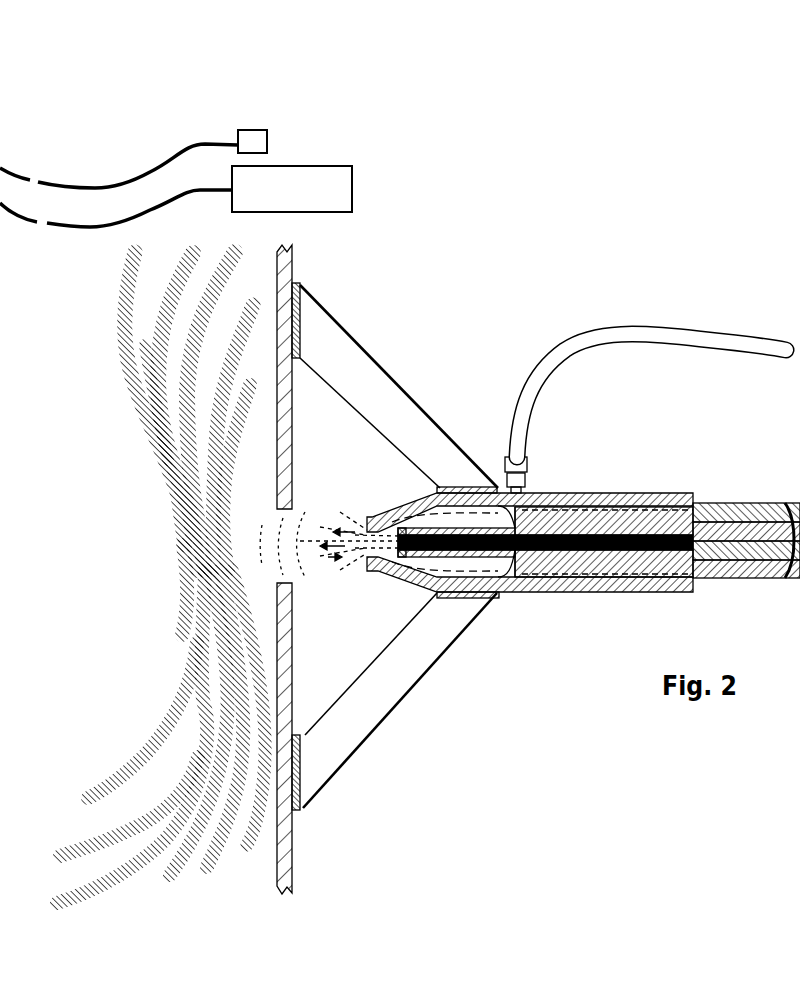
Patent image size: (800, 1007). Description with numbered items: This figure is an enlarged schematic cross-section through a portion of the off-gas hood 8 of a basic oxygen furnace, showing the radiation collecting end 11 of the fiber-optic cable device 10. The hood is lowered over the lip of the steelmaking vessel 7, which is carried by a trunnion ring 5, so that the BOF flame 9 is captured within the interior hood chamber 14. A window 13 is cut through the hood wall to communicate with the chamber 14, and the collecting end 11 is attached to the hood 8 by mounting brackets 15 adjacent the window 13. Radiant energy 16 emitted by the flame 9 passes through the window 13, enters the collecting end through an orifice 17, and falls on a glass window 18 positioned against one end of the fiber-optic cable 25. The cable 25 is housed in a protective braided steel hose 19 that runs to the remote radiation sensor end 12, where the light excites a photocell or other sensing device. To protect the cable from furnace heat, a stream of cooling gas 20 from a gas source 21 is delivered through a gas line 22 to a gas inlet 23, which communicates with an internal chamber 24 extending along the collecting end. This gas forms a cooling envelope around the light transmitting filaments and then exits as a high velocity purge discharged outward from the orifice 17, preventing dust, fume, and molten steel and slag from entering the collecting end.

The trunnion ring 5 is at (0, 594).
The vessel 7 is at (2, 685).
The off-gas hood 8 is at (293, 252).
The BOF flame 9 is at (180, 517).
The fiber-optic cable device 10 is at (271, 111).
The radiation collecting end 11 is at (594, 605).
The radiation sensor end 12 is at (250, 130).
The window 13 is at (272, 517).
The interior hood chamber 14 is at (156, 571).
The mounting brackets 15 is at (357, 372).
The radiant energy 16 is at (327, 512).
The orifice 17 is at (365, 562).
The glass window 18 is at (372, 521).
The protective braided steel hose 19 is at (715, 504).
The stream of cooling gas 20 is at (460, 598).
The gas source 21 is at (318, 205).
The gas line 22 is at (620, 335).
The gas inlet 23 is at (528, 470).
The internal chamber 24 is at (512, 580).
The fiber-optic cable 25 is at (565, 528).